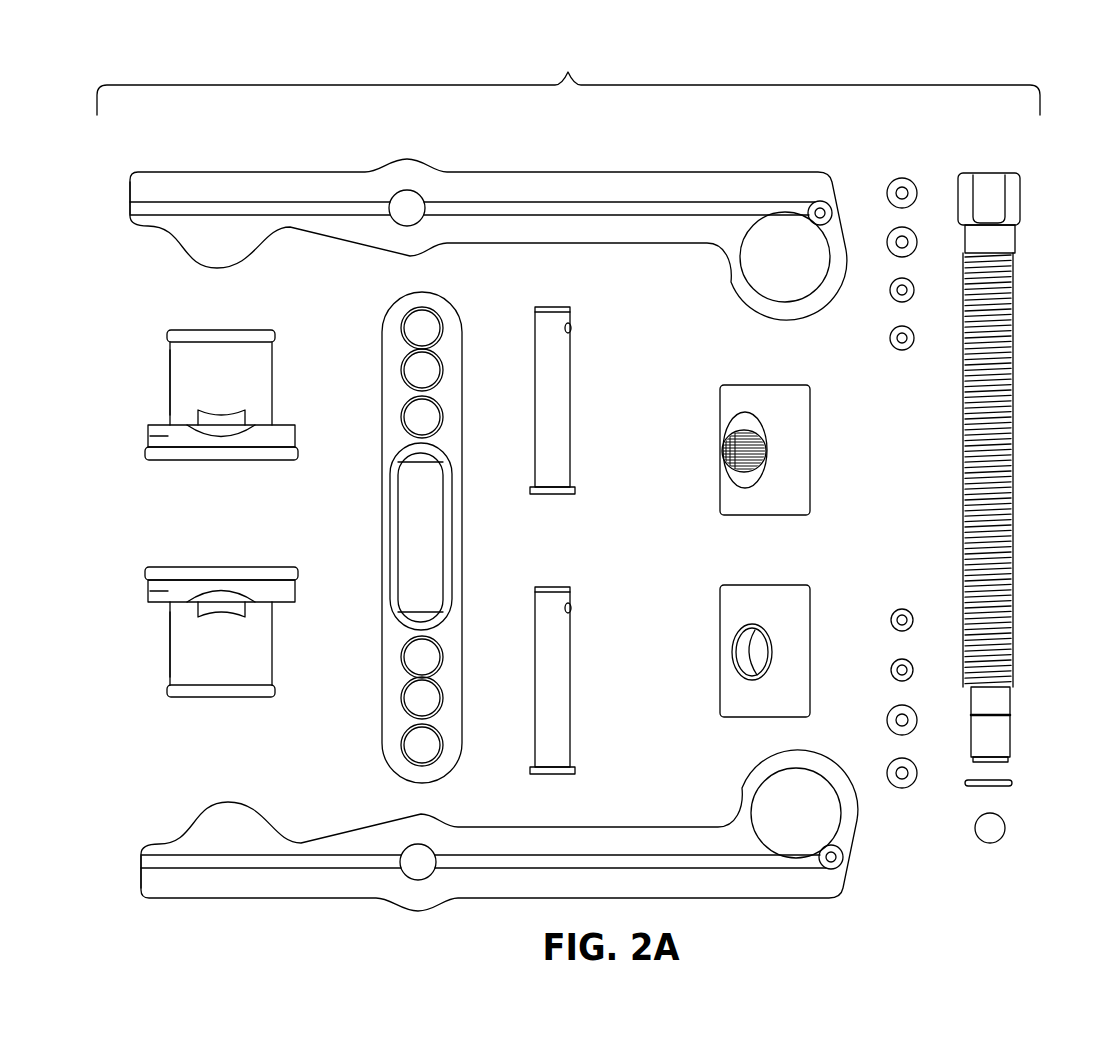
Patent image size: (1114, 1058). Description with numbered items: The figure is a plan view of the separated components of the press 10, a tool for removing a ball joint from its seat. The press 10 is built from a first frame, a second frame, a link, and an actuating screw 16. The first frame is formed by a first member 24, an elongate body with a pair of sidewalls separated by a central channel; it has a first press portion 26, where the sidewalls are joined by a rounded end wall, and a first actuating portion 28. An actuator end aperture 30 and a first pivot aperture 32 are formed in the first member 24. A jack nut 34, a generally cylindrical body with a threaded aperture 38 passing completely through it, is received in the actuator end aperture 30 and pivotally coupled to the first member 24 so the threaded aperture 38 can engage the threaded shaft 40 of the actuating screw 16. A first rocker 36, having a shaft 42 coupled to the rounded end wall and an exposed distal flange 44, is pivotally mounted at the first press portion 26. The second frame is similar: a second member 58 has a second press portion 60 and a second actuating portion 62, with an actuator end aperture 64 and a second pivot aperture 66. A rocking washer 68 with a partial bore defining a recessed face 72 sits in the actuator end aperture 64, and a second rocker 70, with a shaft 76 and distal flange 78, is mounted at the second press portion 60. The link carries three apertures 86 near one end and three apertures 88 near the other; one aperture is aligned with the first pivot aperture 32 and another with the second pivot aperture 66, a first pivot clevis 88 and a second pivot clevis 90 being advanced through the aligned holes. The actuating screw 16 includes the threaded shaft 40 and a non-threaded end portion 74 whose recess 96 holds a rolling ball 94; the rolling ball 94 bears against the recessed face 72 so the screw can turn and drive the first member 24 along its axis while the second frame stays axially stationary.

The press 10 is at (568, 78).
The actuating screw 16 is at (1048, 222).
The first member 24 is at (545, 185).
The first press portion 26 is at (137, 193).
The first actuating portion 28 is at (822, 193).
The actuator end aperture 30 is at (758, 270).
The first pivot aperture 32 is at (405, 205).
The jack nut 34 is at (800, 472).
The first rocker 36 is at (148, 391).
The threaded aperture 38 is at (737, 457).
The threaded shaft 40 is at (1013, 420).
The shaft 42 is at (187, 375).
The distal flange 44 is at (160, 435).
The second member 58 is at (338, 882).
The second press portion 60 is at (141, 883).
The second actuating portion 62 is at (815, 887).
The actuator end aperture 64 is at (820, 825).
The second pivot aperture 66 is at (418, 868).
The rocking washer 68 is at (795, 618).
The second rocker 70 is at (150, 632).
The recessed face 72 is at (760, 651).
The non-threaded end portion 74 is at (1002, 726).
The shaft 76 is at (185, 665).
The distal flange 78 is at (160, 590).
The apertures 86 is at (417, 417).
The apertures / first pivot clevis 88 is at (422, 745).
The second pivot clevis 90 is at (572, 692).
The rolling ball 94 is at (1005, 833).
The recess 96 is at (998, 762).